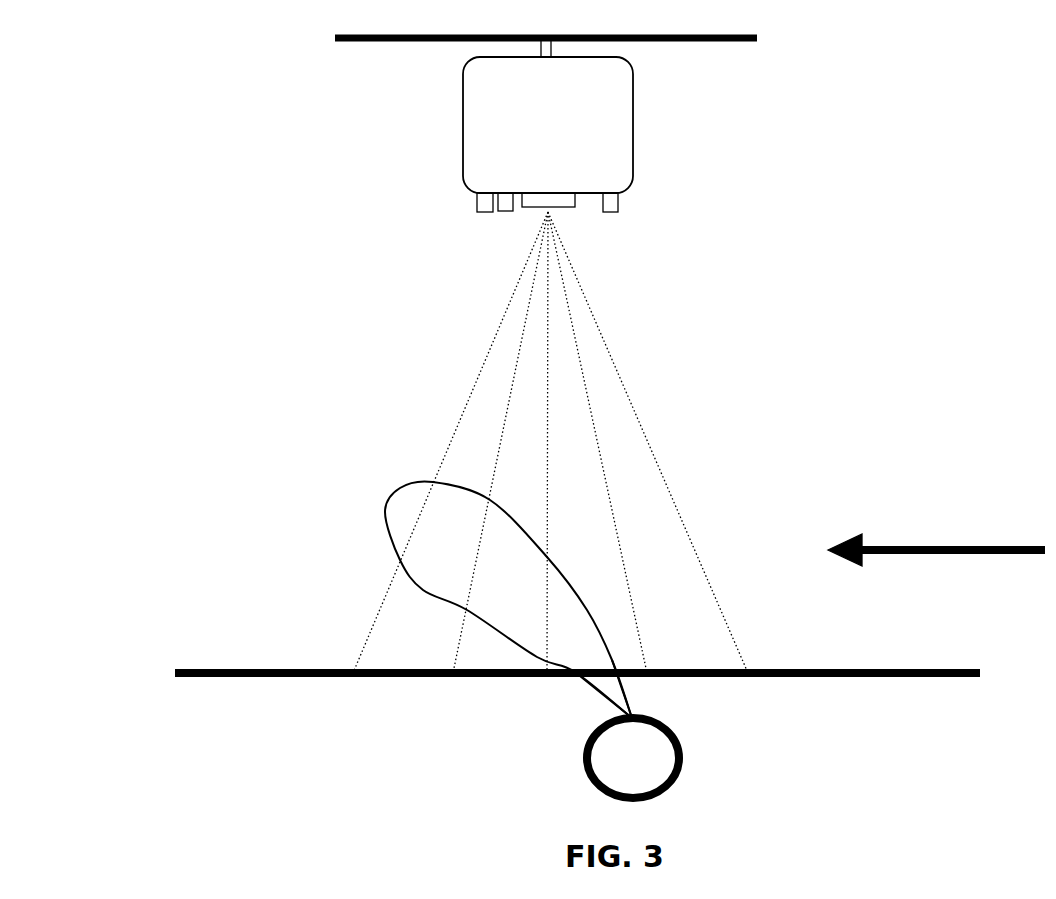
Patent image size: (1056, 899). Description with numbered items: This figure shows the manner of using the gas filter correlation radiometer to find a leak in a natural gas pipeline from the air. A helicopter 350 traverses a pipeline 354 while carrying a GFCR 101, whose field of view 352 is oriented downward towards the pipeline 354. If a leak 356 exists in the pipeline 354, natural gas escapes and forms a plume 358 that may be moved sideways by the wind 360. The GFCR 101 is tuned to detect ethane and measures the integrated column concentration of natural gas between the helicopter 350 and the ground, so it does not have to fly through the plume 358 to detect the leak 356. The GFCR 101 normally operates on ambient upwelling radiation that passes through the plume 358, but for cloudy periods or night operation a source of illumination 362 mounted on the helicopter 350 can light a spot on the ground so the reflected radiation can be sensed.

The helicopter 350 is at (633, 165).
The source of illumination 362 is at (505, 211).
The gas filter correlation radiometer 101 is at (570, 208).
The field of view 352 is at (665, 457).
The plume 358 is at (385, 512).
The leak 356 is at (627, 712).
The pipeline 354 is at (685, 768).
The wind 360 is at (987, 522).